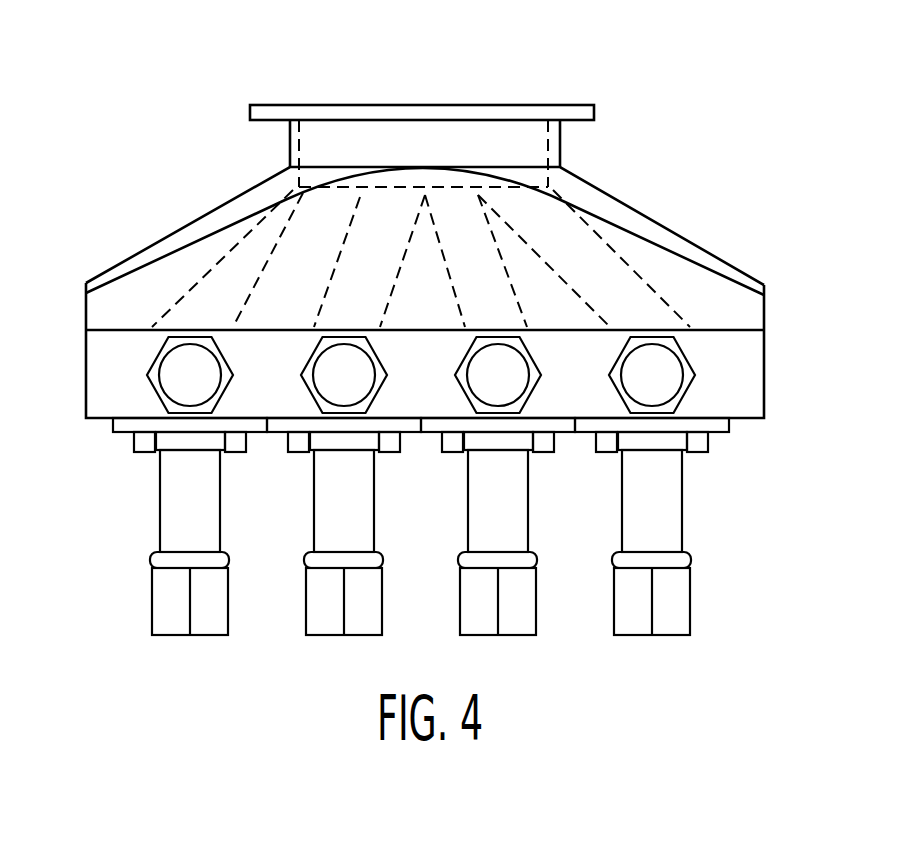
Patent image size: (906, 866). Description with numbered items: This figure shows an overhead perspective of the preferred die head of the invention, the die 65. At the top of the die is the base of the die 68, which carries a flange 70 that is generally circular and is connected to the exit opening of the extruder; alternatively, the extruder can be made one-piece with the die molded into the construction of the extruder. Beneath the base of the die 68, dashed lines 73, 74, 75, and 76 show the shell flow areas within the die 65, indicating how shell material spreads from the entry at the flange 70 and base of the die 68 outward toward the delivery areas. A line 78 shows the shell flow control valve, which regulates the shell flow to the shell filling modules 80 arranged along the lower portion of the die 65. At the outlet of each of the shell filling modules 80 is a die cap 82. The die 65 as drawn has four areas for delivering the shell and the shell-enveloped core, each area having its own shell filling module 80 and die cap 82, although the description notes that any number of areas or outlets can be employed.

The die 65 is at (670, 154).
The base of the die 68 is at (266, 156).
The flange 70 is at (466, 103).
The shell flow area 73 is at (245, 280).
The shell flow area 74 is at (372, 262).
The shell flow area 75 is at (463, 277).
The shell flow area 76 is at (627, 282).
The shell flow control valve 78 is at (177, 380).
The shell filling module 80 is at (147, 515).
The die cap 82 is at (228, 595).